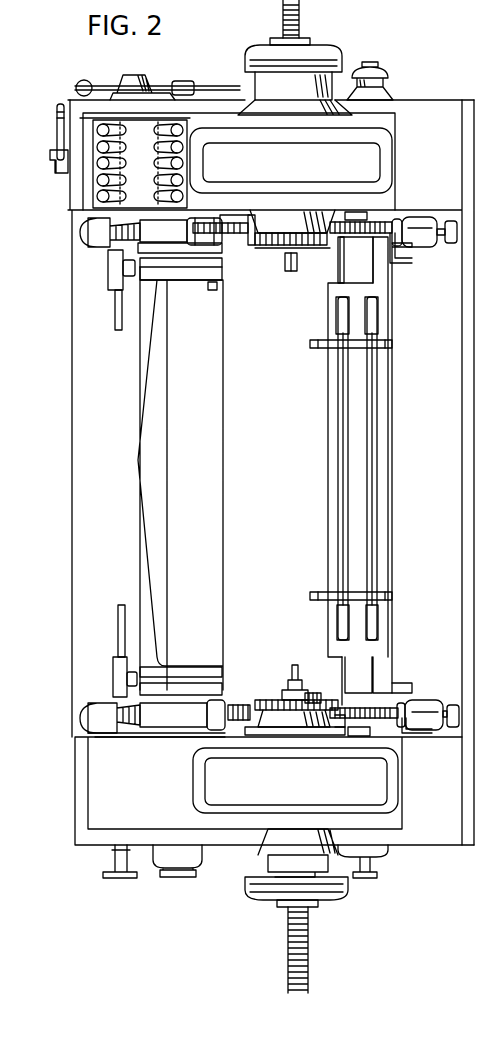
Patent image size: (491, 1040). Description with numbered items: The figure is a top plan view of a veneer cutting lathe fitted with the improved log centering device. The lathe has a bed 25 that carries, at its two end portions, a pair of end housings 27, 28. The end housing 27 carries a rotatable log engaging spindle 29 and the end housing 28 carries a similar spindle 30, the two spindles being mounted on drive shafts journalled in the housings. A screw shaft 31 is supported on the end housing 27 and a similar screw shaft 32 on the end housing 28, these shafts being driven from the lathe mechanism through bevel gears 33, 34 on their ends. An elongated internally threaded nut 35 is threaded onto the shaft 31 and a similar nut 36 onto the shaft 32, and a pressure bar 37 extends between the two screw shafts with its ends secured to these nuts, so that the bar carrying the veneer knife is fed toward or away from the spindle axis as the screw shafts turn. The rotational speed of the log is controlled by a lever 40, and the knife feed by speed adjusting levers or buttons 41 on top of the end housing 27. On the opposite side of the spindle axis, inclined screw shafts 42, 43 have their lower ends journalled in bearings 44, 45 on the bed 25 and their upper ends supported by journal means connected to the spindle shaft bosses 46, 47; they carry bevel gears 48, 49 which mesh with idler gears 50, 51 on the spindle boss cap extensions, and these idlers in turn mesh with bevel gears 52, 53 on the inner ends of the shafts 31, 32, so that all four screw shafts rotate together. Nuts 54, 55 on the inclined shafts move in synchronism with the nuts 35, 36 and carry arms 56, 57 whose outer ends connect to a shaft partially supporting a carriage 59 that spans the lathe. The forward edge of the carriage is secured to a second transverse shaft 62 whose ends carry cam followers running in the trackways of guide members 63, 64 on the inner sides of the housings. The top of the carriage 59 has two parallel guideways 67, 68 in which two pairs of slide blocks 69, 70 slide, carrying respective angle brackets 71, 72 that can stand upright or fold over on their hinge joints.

The bed 25 is at (72, 406).
The end housing 27 is at (452, 104).
The end housing 28 is at (450, 835).
The log engaging spindle 29 is at (292, 272).
The spindle 30 is at (290, 684).
The screw shaft 31 is at (228, 228).
The screw shaft 32 is at (245, 705).
The bevel gear 33 is at (110, 248).
The bevel gear 34 is at (112, 698).
The internally threaded sleeve or nut 35 is at (162, 220).
The sleeve or nut 36 is at (168, 728).
The pressure bar 37 is at (224, 440).
The lever 40 is at (57, 134).
The speed adjusting levers or buttons 41 is at (158, 158).
The screw shaft 42 is at (382, 226).
The screw shaft 43 is at (358, 708).
The bearing 44 is at (449, 243).
The bearing 45 is at (453, 705).
The spindle shaft boss 46 is at (285, 220).
The spindle shaft boss 47 is at (305, 728).
The bevel gear 48 is at (336, 240).
The bevel gear 49 is at (340, 730).
The idler gear 50 is at (262, 248).
The idler gear 51 is at (327, 682).
The bevel gear 52 is at (250, 244).
The bevel gear 53 is at (256, 730).
The internally screw threaded sleeve or nut 54 is at (420, 218).
The sleeve or nut 55 is at (424, 733).
The arm or extension 56 is at (398, 262).
The arm or extension 57 is at (418, 700).
The carriage 59 is at (393, 623).
The second transverse shaft 62 is at (348, 282).
The cam or guide member 63 is at (360, 210).
The cam or guide member 64 is at (362, 740).
The groove or guideway 67 is at (378, 396).
The groove or guideway 68 is at (340, 398).
The slide blocks 69 is at (375, 320).
The slide blocks 70 is at (375, 590).
The angle bracket 71 is at (320, 350).
The angle bracket 72 is at (320, 592).